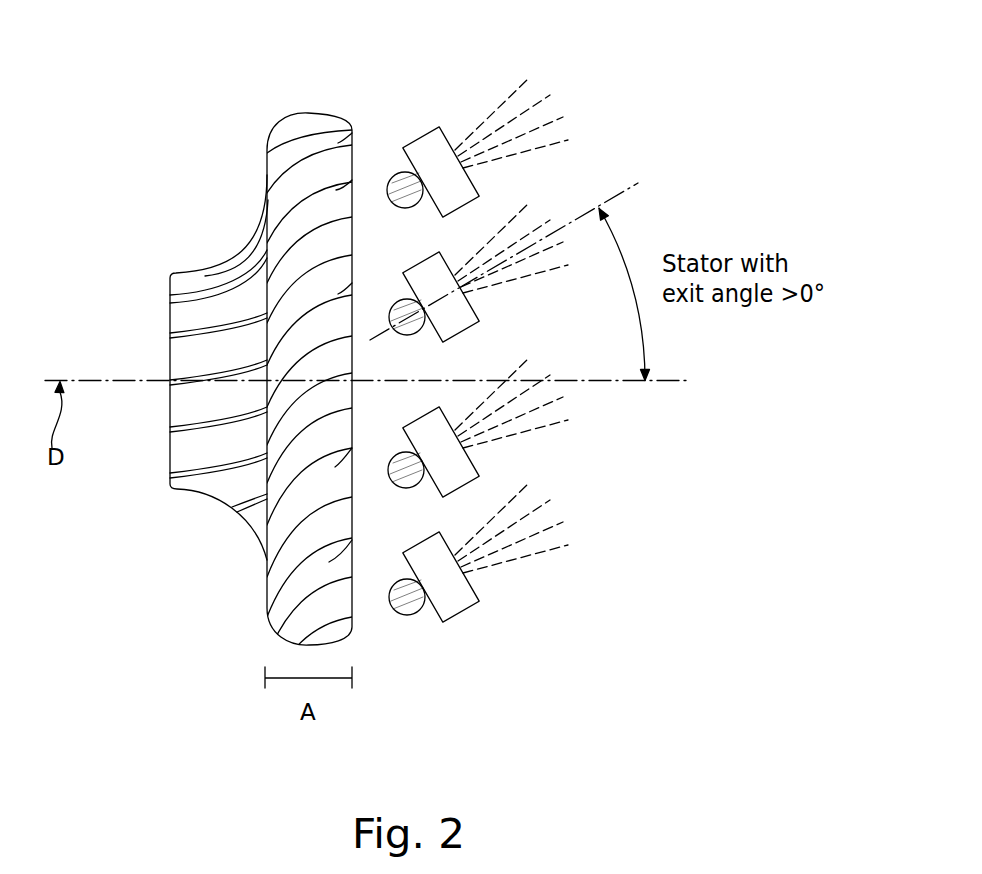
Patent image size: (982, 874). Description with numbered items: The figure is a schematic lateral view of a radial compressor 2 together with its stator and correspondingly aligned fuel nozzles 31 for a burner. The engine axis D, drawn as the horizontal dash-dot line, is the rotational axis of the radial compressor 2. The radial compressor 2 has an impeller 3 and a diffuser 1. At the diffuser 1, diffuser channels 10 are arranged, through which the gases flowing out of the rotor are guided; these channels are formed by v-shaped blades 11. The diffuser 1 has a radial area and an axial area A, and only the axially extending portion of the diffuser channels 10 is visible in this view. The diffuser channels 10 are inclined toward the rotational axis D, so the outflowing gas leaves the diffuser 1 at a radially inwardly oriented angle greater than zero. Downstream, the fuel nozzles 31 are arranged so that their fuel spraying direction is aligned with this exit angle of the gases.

The diffuser 1 is at (325, 98).
The radial compressor 2 is at (253, 690).
The impeller 3 is at (202, 253).
The diffuser channels 10 is at (352, 133).
The v-shaped blades 11 is at (352, 180).
The fuel nozzles 31 is at (445, 147).